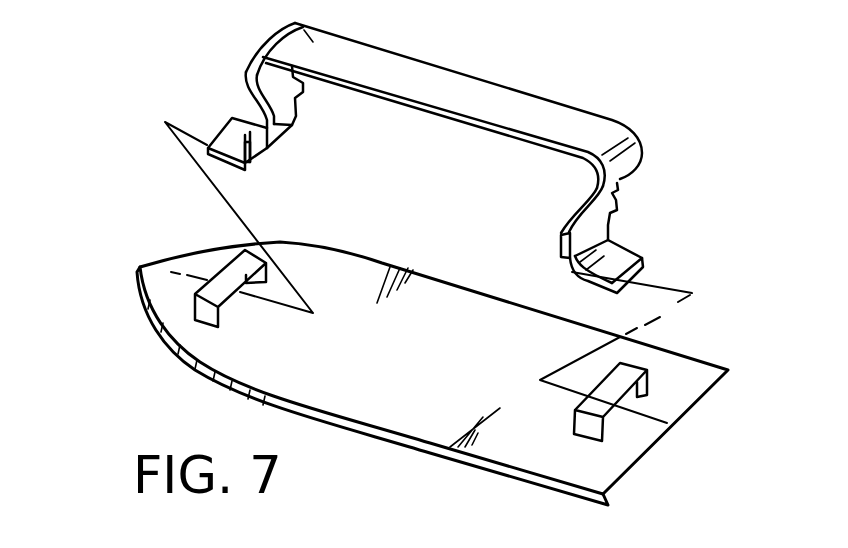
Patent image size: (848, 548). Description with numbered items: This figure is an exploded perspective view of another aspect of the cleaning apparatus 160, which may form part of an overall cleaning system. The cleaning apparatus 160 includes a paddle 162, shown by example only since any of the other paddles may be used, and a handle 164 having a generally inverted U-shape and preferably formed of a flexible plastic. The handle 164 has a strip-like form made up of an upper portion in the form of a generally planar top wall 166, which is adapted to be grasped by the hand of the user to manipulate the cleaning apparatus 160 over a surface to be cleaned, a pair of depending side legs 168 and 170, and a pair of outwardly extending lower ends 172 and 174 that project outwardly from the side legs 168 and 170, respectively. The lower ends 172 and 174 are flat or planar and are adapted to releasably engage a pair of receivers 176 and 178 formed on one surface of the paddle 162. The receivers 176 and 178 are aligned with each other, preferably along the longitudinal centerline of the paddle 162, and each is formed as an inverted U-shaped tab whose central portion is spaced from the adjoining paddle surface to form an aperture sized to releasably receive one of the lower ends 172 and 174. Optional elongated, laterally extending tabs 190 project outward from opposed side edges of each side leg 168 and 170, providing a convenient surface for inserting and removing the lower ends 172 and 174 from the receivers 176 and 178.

The cleaning apparatus 160 is at (125, 82).
The paddle 162 is at (364, 336).
The handle 164 is at (444, 103).
The top wall 166 is at (503, 103).
The side leg 168 is at (282, 128).
The side leg 170 is at (620, 179).
The lower end 172 is at (230, 126).
The lower end 174 is at (615, 265).
The receiver 176 is at (230, 266).
The receiver 178 is at (635, 373).
The tabs 190 is at (246, 163).